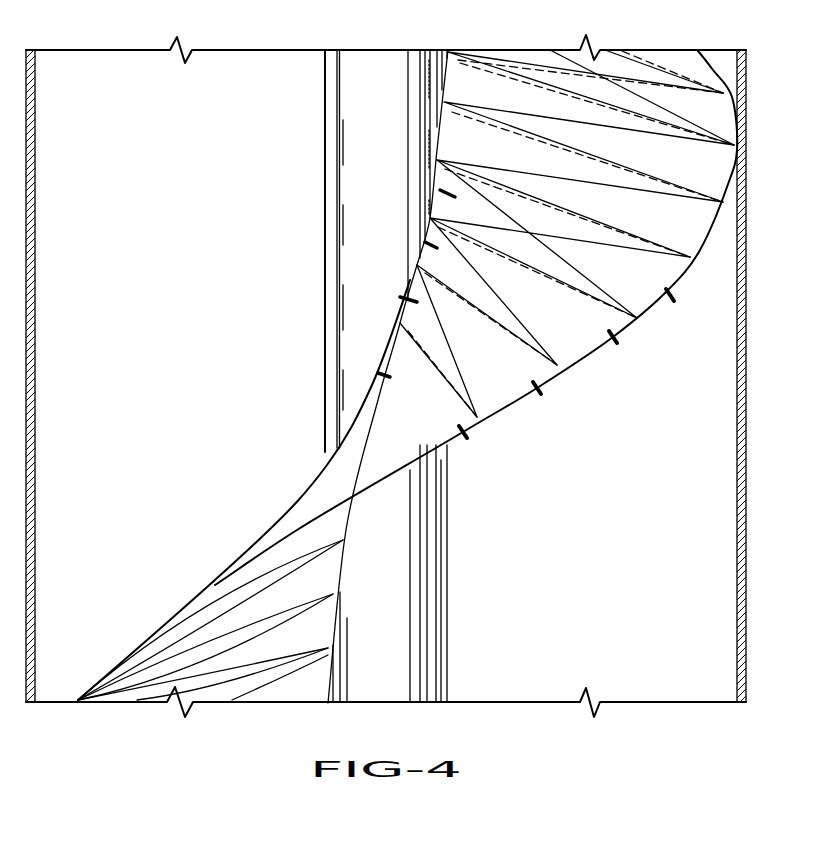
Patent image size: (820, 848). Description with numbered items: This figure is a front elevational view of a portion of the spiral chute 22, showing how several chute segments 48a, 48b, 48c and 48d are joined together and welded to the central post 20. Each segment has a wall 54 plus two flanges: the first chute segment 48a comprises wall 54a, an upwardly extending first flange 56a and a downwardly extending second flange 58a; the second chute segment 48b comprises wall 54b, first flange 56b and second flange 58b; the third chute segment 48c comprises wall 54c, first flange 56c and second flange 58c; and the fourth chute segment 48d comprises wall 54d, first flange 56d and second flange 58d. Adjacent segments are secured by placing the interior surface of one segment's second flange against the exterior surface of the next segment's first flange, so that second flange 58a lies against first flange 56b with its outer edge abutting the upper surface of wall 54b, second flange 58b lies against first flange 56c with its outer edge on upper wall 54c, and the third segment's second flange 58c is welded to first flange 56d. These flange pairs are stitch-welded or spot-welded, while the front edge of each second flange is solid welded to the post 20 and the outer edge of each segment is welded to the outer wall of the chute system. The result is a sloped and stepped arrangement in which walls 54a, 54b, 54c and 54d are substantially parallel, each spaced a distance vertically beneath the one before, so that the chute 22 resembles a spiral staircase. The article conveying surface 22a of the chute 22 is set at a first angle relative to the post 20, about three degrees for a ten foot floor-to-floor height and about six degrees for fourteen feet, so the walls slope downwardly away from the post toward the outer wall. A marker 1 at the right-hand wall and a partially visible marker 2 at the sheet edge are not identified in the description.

The housing / conveyor tube 1 is at (748, 268).
The conveyor 2 is at (815, 374).
The post 20 is at (449, 567).
The chute 22 is at (196, 589).
The article conveying surface 22a is at (262, 540).
The chute segment 48a is at (673, 300).
The chute segment 48b is at (617, 342).
The chute segment 48c is at (540, 393).
The chute segment 48d is at (467, 438).
The wall 54 is at (700, 172).
The wall 54a is at (640, 300).
The wall 54b is at (575, 347).
The wall 54c is at (492, 395).
The wall 54d is at (410, 443).
The first flange 56a is at (463, 160).
The first flange 56b is at (500, 247).
The first flange 56c is at (463, 297).
The first flange 56d is at (437, 377).
The second flange 58a is at (455, 197).
The second flange 58b is at (437, 248).
The second flange 58c is at (417, 302).
The second flange 58d is at (390, 377).